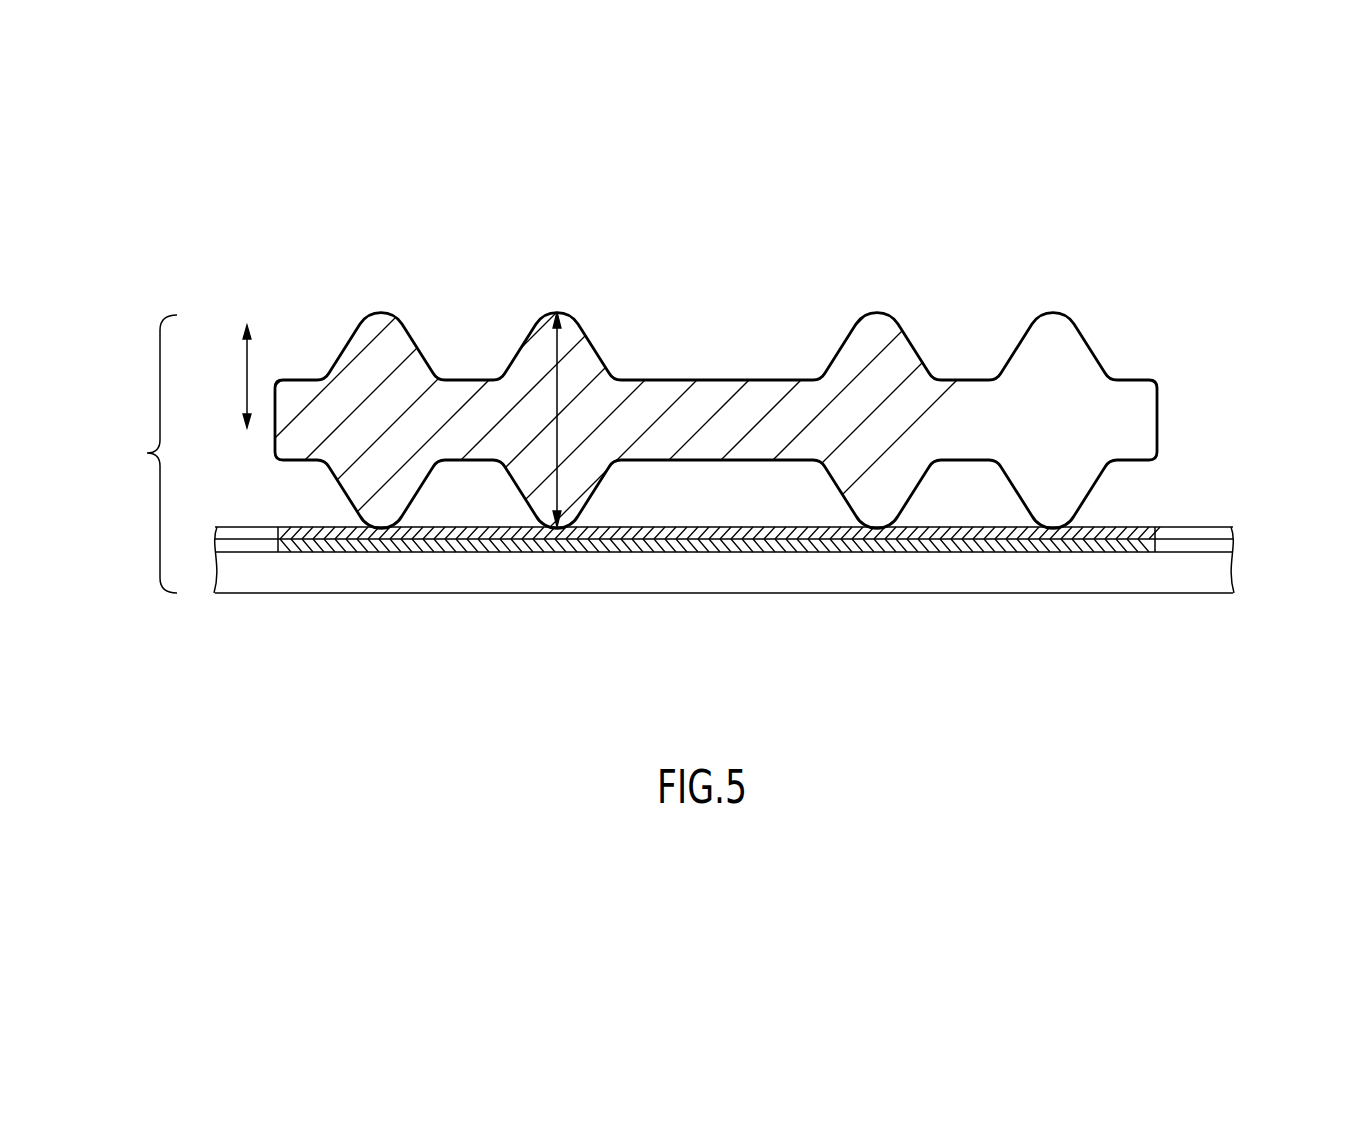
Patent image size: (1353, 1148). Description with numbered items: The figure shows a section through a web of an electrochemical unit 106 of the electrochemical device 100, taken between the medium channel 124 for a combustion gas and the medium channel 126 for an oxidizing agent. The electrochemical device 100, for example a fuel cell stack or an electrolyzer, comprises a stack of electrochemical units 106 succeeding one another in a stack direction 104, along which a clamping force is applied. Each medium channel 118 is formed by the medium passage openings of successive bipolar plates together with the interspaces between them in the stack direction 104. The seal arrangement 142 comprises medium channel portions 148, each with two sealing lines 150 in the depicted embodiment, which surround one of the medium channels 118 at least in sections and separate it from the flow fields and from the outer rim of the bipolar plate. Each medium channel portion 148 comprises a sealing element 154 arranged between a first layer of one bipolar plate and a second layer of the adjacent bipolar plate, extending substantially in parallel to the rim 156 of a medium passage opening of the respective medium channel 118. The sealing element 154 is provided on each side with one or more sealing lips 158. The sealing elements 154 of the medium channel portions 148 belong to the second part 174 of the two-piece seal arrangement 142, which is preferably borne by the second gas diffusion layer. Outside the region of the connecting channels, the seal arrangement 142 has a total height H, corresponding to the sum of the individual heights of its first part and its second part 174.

The electrochemical device 100 is at (1170, 520).
The stack direction 104 is at (247, 372).
The electrochemical unit 106 is at (136, 454).
The medium channel 118 is at (180, 507).
The medium channel for a combustion gas 124 is at (1266, 594).
The medium channel for an oxidizing agent 126 is at (258, 507).
The seal arrangement 142 is at (648, 361).
The medium channel portion 148 is at (1105, 347).
The sealing line 150 is at (383, 312).
The sealing element 154 is at (368, 357).
The rim of a medium passage opening 156 is at (272, 548).
The sealing lip 158 is at (400, 338).
The second part of the seal arrangement 174 is at (664, 390).